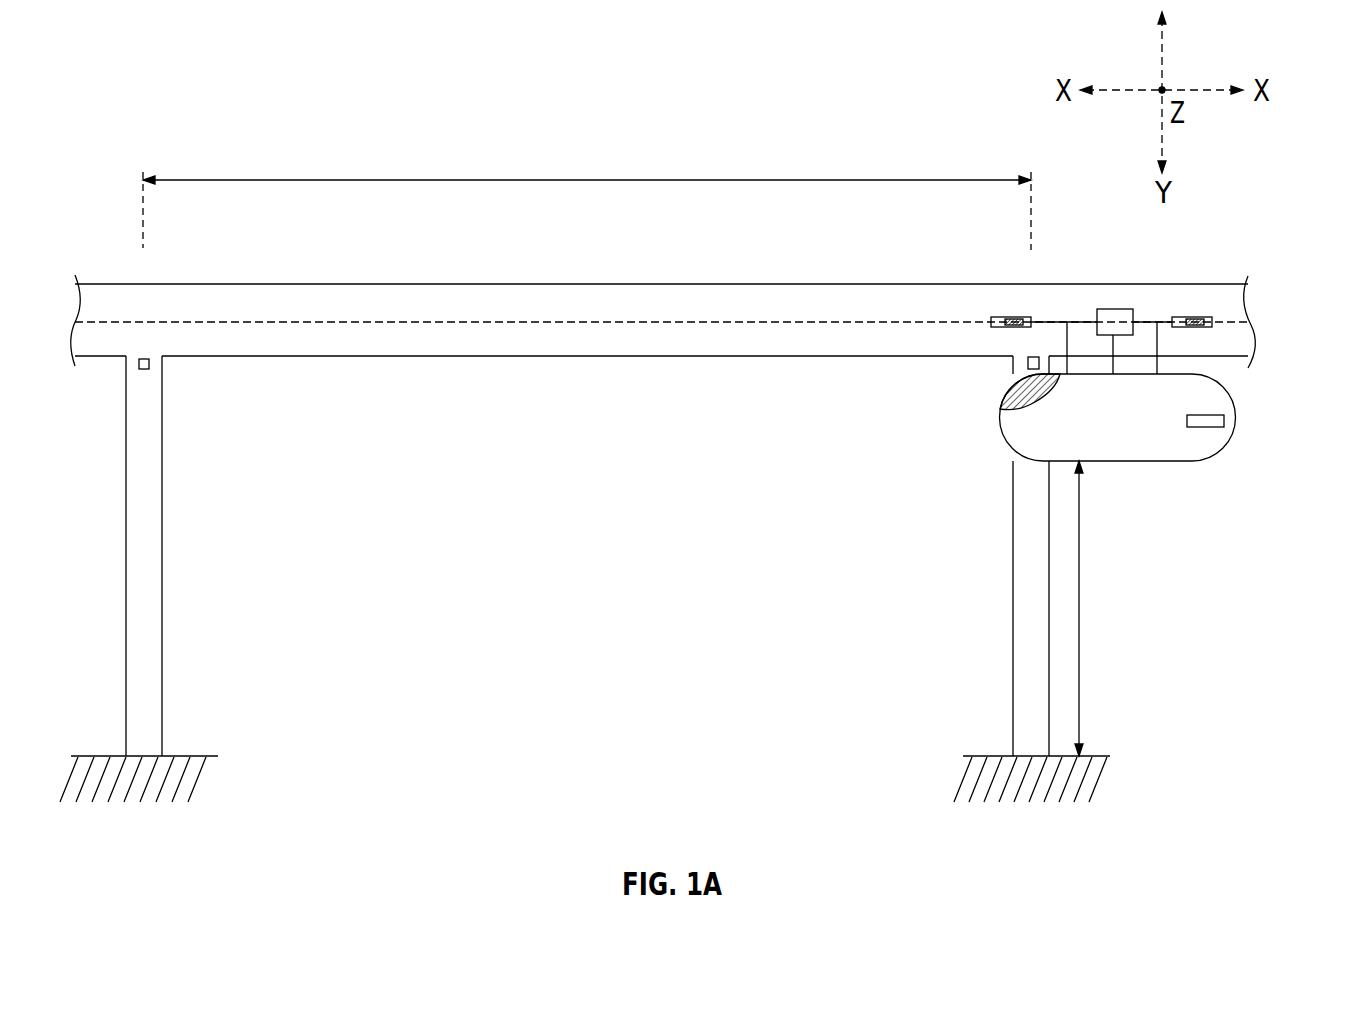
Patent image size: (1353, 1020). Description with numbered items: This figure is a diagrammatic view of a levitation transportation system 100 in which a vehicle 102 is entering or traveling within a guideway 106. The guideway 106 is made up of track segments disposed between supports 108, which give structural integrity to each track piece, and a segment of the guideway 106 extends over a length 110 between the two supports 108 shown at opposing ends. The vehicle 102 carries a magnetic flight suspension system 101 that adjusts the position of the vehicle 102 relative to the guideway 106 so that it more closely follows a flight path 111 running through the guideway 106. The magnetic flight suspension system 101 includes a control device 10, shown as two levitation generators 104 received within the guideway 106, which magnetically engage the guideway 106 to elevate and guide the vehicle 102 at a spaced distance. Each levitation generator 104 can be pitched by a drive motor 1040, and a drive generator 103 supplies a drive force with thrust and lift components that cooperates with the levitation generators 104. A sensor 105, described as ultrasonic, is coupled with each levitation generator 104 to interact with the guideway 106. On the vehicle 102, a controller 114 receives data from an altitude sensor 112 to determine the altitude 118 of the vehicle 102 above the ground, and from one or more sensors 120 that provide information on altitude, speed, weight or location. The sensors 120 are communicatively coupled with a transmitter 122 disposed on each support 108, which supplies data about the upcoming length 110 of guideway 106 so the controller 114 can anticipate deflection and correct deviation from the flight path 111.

The levitation transportation system 100 is at (397, 146).
The vehicle 102 is at (1002, 433).
The drive generator 103 is at (1113, 309).
The levitation generator 104 is at (1101, 288).
The control device 10 is at (1101, 288).
The magnetic flight suspension system 101 is at (1101, 288).
The sensor 105 is at (993, 325).
The drive motor 1040 is at (1020, 318).
The guideway 106 is at (342, 357).
The support 108 is at (145, 547).
The length 110 is at (590, 178).
The flight path 111 is at (540, 334).
The altitude sensor 112 is at (1208, 427).
The controller 114 is at (1233, 463).
The altitude 118 is at (1083, 610).
The sensor 120 is at (1205, 463).
The transmitter 122 is at (152, 363).